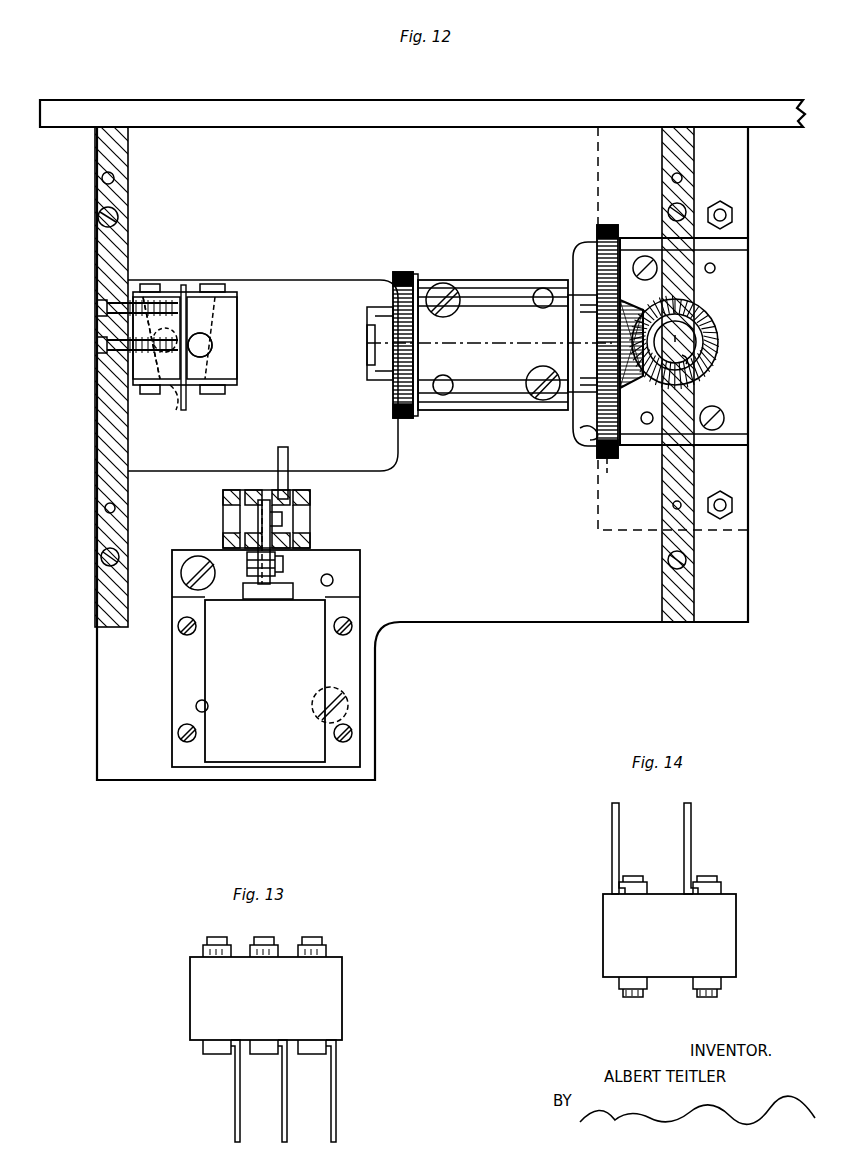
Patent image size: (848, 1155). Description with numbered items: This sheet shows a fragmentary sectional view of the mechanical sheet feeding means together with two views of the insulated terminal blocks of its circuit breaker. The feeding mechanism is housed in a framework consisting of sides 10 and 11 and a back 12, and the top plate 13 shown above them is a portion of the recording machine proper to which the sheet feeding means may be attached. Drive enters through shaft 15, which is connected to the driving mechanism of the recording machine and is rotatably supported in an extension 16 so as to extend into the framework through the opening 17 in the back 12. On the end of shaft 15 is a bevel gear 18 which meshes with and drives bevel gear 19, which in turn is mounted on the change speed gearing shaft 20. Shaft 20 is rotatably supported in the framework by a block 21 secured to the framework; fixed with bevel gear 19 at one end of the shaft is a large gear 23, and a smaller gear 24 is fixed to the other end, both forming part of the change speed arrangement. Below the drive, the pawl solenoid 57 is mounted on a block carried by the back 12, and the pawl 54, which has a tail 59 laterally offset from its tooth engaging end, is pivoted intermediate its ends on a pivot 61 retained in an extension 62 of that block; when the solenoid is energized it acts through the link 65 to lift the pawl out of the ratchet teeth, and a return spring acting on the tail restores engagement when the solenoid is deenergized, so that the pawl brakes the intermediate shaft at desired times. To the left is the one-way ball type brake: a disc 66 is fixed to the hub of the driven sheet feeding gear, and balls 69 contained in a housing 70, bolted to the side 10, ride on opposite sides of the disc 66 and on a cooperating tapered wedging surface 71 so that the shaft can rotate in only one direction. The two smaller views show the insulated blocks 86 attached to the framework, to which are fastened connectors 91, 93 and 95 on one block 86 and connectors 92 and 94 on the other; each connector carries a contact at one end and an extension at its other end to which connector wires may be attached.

In FIG. 12, the side 10 is at (96, 600).
In FIG. 12, the side 11 is at (690, 622).
In FIG. 12, the back 12 is at (422, 624).
In FIG. 12, the top plate 13 is at (212, 102).
In FIG. 12, the shaft 15 is at (684, 365).
In FIG. 12, the extension 16 is at (740, 296).
In FIG. 12, the opening 17 is at (590, 444).
In FIG. 12, the bevel gear 18 is at (722, 346).
In FIG. 12, the bevel gear 19 is at (630, 380).
In FIG. 12, the change speed gearing shaft 20 is at (368, 345).
In FIG. 12, the block 21 is at (488, 280).
In FIG. 12, the large gear 23 is at (596, 228).
In FIG. 12, the smaller gear 24 is at (404, 272).
In FIG. 12, the pawl 54 is at (270, 500).
In FIG. 12, the pawl solenoid 57 is at (266, 658).
In FIG. 12, the tail 59 is at (288, 455).
In FIG. 12, the pivot 61 is at (303, 518).
In FIG. 12, the extension 62 is at (222, 492).
In FIG. 12, the link 65 is at (248, 560).
In FIG. 12, the disc 66 is at (186, 406).
In FIG. 12, the balls 69 is at (201, 334).
In FIG. 12, the housing 70 is at (236, 352).
In FIG. 12, the tapered wedging surface 71 is at (215, 326).
In FIG. 13, the insulated block 86 is at (342, 970).
In FIG. 14, the insulated block 86 is at (736, 906).
In FIG. 13, the connector 91 is at (341, 1116).
In FIG. 14, the connector 92 is at (691, 842).
In FIG. 13, the connector 93 is at (287, 1106).
In FIG. 14, the connector 94 is at (619, 848).
In FIG. 13, the connector 95 is at (240, 1110).